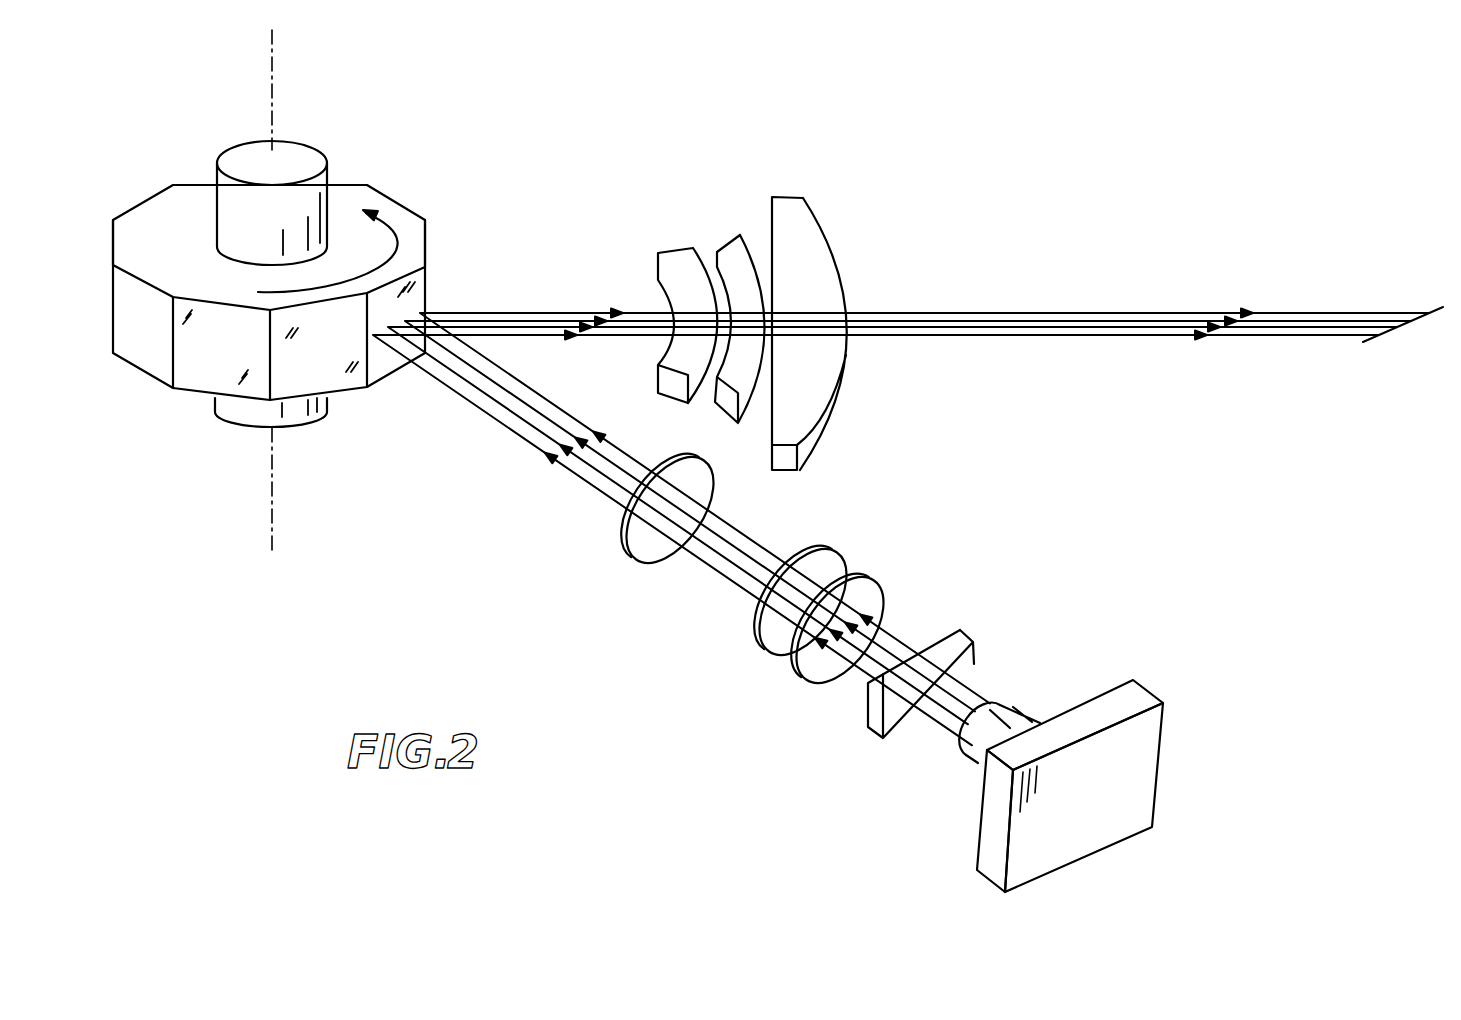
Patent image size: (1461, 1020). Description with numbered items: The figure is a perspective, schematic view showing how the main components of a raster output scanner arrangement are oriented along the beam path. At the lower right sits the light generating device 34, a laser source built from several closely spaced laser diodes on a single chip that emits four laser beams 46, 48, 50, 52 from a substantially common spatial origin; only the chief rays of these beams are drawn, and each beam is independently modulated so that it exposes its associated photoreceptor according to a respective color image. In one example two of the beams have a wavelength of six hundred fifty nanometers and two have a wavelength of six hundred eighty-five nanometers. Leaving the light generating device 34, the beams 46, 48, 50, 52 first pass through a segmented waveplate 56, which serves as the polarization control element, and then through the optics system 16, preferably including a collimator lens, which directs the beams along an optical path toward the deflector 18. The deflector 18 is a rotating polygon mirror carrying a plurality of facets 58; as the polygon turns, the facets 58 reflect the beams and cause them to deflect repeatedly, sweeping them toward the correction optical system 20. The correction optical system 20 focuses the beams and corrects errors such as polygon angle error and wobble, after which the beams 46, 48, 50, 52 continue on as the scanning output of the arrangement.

The deflector 18 is at (383, 168).
The facets 58 is at (213, 358).
The correction optical system 20 is at (712, 223).
The optics system 16 is at (757, 653).
The segmented waveplate 56 is at (968, 627).
The light generating device 34 is at (1153, 683).
The laser beam 46 is at (938, 720).
The laser beam 48 is at (960, 723).
The laser beam 50 is at (972, 707).
The laser beam 52 is at (983, 697).